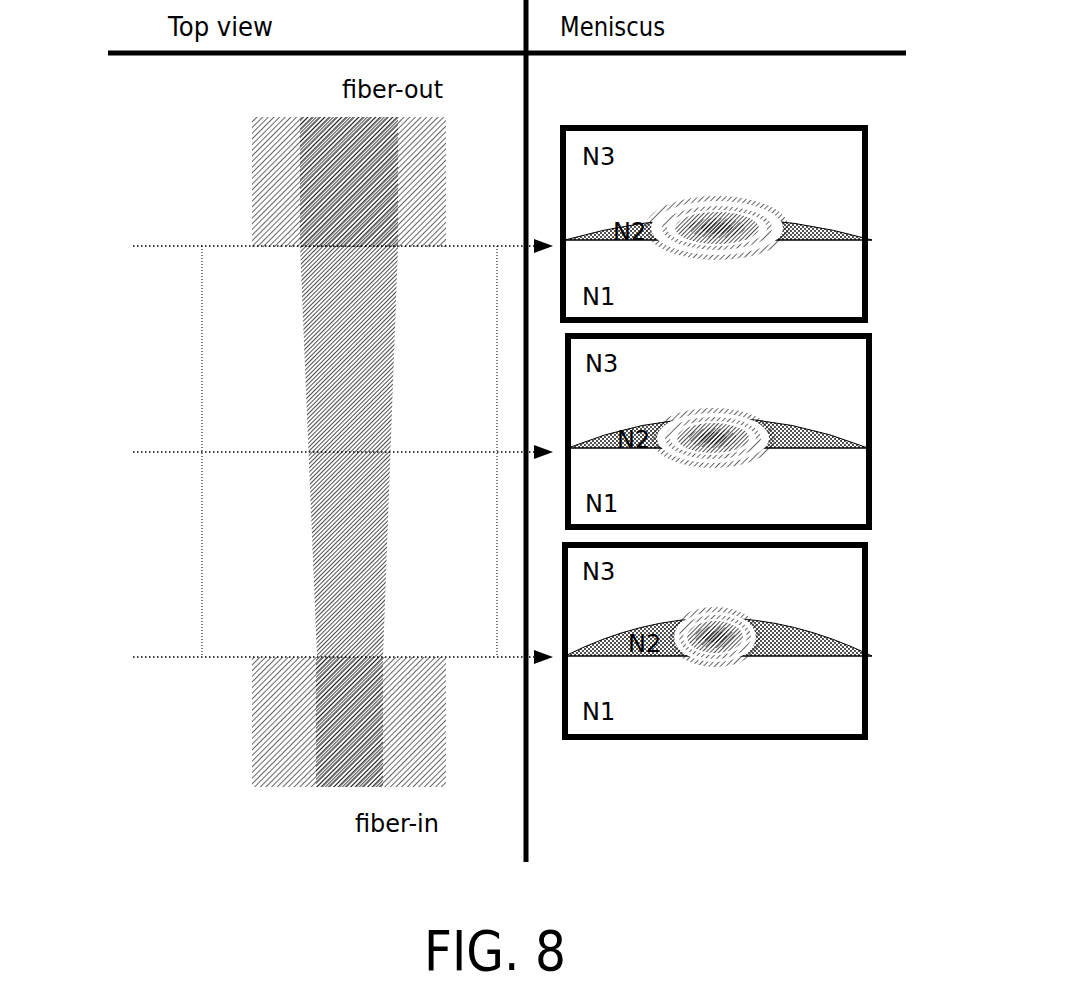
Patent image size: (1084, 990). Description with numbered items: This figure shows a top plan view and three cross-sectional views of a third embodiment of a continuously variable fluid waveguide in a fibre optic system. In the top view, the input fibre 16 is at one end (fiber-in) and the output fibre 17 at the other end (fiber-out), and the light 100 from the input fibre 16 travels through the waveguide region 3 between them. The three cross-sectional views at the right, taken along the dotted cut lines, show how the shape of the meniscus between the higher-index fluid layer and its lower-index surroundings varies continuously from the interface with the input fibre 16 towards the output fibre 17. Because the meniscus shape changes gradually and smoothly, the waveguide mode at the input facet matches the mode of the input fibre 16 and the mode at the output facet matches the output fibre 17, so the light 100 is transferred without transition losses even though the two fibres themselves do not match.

The optical element / switching region 3 is at (202, 353).
The input fibre 16 is at (252, 720).
The output fibre 17 is at (252, 182).
The light 100 is at (313, 545).